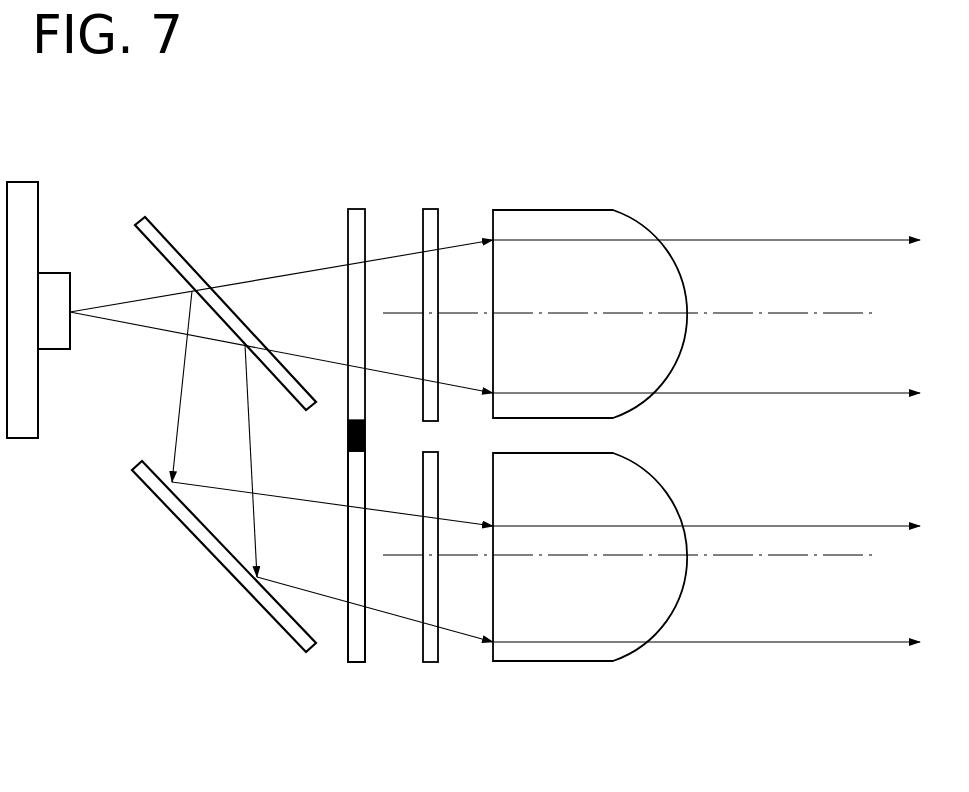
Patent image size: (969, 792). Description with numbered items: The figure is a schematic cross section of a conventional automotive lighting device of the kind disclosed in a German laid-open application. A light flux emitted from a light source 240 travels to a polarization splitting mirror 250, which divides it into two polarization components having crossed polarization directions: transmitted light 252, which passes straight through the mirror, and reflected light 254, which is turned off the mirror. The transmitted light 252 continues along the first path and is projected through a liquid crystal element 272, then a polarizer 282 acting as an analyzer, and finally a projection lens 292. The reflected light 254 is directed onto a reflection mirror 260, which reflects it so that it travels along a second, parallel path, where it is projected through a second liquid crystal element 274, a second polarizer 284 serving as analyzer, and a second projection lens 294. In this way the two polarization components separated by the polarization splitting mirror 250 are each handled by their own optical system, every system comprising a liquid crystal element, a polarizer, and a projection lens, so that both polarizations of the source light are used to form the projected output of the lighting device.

The light source 240 is at (55, 273).
The polarization splitting mirror 250 is at (150, 220).
The transmitted light 252 is at (281, 313).
The reflected light 254 is at (210, 412).
The reflection mirror 260 is at (150, 493).
The liquid crystal element 272 is at (358, 210).
The liquid crystal element 274 is at (357, 663).
The polarizer 282 is at (432, 208).
The polarizer 284 is at (430, 663).
The projection lens 292 is at (600, 210).
The projection lens 294 is at (658, 478).